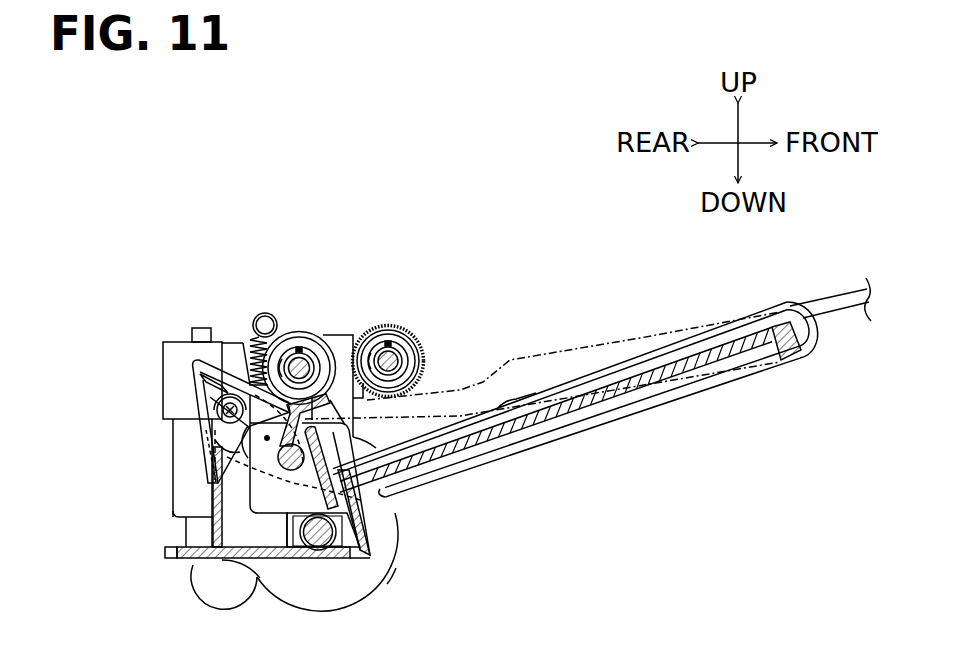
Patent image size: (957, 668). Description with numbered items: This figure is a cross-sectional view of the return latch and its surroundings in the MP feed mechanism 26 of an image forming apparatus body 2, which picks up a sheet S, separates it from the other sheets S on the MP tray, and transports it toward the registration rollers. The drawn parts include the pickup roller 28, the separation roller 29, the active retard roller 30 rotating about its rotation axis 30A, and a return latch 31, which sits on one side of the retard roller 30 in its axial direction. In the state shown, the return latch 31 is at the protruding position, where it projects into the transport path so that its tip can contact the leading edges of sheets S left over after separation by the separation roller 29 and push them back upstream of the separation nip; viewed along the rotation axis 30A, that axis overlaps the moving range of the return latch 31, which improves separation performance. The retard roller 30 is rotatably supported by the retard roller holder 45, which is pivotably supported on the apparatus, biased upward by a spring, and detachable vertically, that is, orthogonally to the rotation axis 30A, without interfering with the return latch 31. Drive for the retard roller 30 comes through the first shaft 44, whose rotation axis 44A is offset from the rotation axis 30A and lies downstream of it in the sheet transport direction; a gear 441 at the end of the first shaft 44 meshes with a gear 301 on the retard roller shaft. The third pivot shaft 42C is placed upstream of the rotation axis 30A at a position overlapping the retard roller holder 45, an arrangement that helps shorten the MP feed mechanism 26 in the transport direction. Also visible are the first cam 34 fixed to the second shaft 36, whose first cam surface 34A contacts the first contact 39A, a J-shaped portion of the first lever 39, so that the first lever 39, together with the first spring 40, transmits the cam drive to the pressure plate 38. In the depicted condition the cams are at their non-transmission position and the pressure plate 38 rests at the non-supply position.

The image forming apparatus body 2 is at (160, 340).
The MP feed mechanism 26 is at (160, 301).
The pickup roller 28 is at (388, 326).
The separation roller 29 is at (300, 332).
The active retard roller 30 is at (175, 518).
The rotation axis 30A is at (267, 438).
The gear 301 is at (240, 452).
The return latch 31 is at (280, 432).
The first cam 34 is at (395, 556).
The first cam surface 34A is at (388, 584).
The second shaft 36 is at (322, 546).
The pressure plate 38 is at (552, 345).
The first lever 39 is at (185, 575).
The first contact 39A is at (196, 592).
The first spring 40 is at (265, 312).
The third pivot shaft 42C is at (278, 468).
The first shaft 44 is at (203, 376).
The gear 441 is at (217, 402).
The rotation axis 44A is at (199, 421).
The retard roller holder 45 is at (347, 497).
The sheet S is at (823, 305).